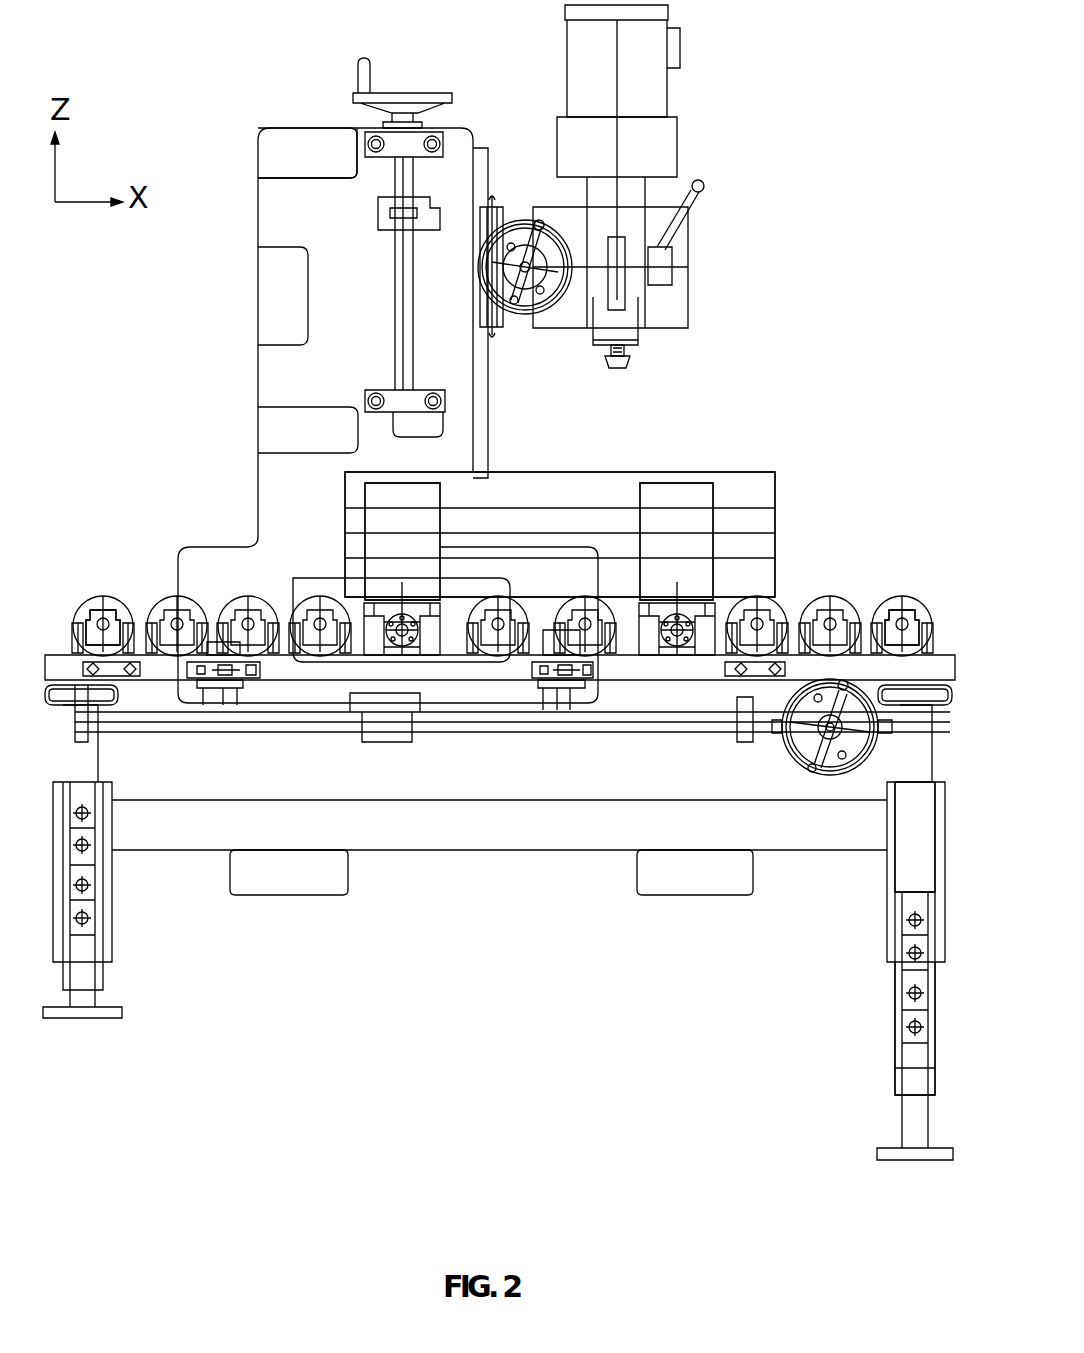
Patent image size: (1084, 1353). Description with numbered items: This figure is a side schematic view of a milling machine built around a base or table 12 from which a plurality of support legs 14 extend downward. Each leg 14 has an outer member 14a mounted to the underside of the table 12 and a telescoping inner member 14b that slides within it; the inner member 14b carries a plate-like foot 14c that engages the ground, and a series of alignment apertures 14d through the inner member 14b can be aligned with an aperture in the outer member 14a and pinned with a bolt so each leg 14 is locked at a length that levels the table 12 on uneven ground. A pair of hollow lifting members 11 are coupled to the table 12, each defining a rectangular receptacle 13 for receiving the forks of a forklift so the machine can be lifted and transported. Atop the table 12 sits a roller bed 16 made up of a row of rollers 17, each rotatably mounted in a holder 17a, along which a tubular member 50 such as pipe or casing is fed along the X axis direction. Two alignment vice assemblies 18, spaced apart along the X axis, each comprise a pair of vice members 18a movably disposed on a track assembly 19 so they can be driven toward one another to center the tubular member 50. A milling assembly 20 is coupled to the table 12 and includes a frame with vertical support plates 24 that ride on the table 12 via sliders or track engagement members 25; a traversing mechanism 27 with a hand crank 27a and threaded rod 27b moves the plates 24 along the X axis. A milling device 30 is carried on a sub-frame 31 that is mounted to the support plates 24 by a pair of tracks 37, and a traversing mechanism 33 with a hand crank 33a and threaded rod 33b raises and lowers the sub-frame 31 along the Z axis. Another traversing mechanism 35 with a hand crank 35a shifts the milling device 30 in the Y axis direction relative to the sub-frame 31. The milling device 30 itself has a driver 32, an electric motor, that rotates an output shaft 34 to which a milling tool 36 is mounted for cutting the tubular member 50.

The lifting member 11 is at (351, 900).
The table 12 is at (935, 656).
The receptacle 13 is at (278, 876).
The support leg 14 is at (122, 928).
The outer member 14a is at (887, 877).
The inner member 14b is at (893, 1062).
The foot 14c is at (945, 1161).
The alignment aperture 14d is at (908, 918).
The roller bed 16 is at (828, 586).
The roller 17 is at (105, 596).
The holder 17a is at (98, 605).
The alignment vice assembly 18 is at (445, 478).
The vice member 18a is at (372, 499).
The track assembly 19 is at (458, 655).
The milling assembly 20 is at (236, 357).
The vertical support plate 24 is at (278, 198).
The track engagement member 25 is at (206, 695).
The traversing mechanism 27 is at (512, 764).
The hand crank 27a is at (797, 760).
The threaded rod 27b is at (670, 735).
The milling device 30 is at (606, 206).
The sub-frame 31 is at (500, 206).
The driver 32 is at (672, 83).
The traversing mechanism 33 is at (355, 239).
The hand crank 33a is at (383, 75).
The threaded rod 33b is at (403, 286).
The output shaft 34 is at (630, 351).
The traversing mechanism 35 is at (535, 313).
The hand crank 35a is at (548, 310).
The milling tool 36 is at (625, 366).
The track 37 is at (488, 152).
The tubular member 50 is at (555, 472).